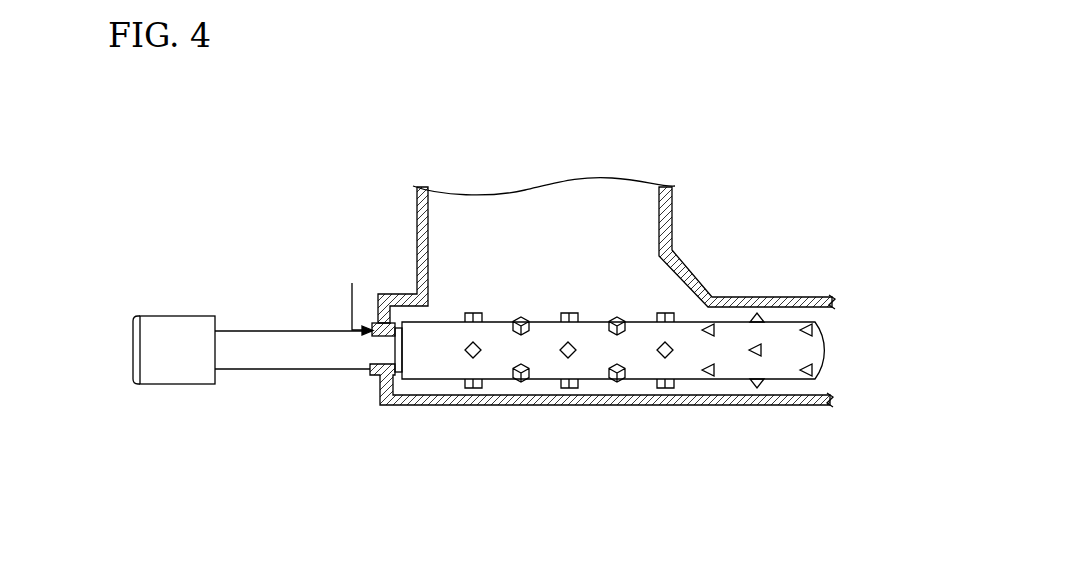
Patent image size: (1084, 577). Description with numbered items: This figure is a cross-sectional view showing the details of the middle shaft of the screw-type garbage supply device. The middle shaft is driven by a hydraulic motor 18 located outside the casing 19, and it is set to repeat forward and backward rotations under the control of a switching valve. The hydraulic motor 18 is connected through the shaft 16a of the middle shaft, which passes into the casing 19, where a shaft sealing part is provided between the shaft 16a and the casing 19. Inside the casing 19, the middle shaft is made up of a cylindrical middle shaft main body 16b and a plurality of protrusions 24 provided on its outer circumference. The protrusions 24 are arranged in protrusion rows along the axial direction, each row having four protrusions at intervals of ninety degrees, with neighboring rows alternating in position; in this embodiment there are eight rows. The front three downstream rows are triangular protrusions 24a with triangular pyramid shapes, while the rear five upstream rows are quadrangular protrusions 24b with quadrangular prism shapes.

The hydraulic motor 18 is at (180, 372).
The shaft of the middle shaft 16a is at (287, 352).
The middle shaft main body 16b is at (645, 366).
The casing 19 is at (430, 405).
The protrusions 24 is at (640, 392).
The triangular protrusions 24a is at (707, 372).
The quadrangular protrusions 24b is at (520, 381).